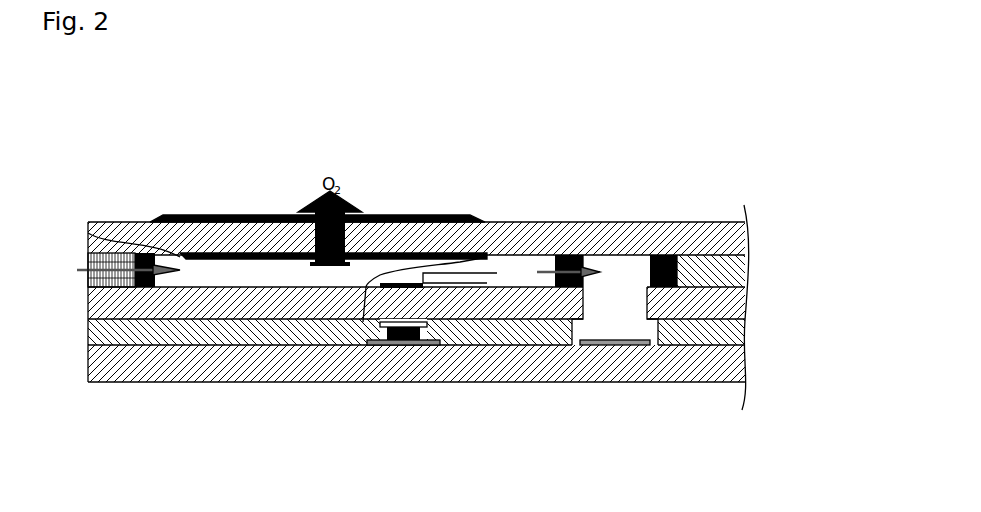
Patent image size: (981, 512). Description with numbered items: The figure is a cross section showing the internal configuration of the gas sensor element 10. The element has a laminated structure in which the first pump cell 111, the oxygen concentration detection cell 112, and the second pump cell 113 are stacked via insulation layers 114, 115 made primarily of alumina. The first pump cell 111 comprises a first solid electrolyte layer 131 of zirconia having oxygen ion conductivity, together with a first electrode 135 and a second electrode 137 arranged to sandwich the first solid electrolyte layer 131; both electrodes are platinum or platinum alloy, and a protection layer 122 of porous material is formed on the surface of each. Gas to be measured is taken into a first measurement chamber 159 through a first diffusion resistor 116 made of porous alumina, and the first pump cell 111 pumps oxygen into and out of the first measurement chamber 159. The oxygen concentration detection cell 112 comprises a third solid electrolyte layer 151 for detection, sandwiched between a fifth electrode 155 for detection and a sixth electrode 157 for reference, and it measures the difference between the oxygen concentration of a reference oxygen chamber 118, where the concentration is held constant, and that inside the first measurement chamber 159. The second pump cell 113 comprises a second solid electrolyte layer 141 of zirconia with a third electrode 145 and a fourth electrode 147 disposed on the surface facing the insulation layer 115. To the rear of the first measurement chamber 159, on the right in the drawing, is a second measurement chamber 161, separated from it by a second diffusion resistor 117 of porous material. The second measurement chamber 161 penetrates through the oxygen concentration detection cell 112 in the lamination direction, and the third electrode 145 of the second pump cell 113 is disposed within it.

The gas sensor element 10 is at (378, 156).
The first pump cell 111 is at (180, 158).
The oxygen concentration detection cell 112 is at (452, 161).
The second pump cell 113 is at (610, 444).
The insulation layer 114 is at (727, 273).
The insulation layer 115 is at (742, 330).
The first diffusion resistor 116 is at (88, 233).
The second diffusion resistor 117 is at (585, 254).
The reference oxygen chamber 118 is at (383, 332).
The protection layer 122 is at (180, 256).
The first solid electrolyte layer 131 is at (270, 240).
The first electrode 135 is at (207, 222).
The second electrode 137 is at (248, 222).
The second solid electrolyte layer 141 is at (717, 362).
The third electrode 145 is at (585, 347).
The fourth electrode 147 is at (428, 345).
The third solid electrolyte layer 151 is at (490, 288).
The fifth electrode 155 is at (470, 287).
The sixth electrode 157 is at (482, 258).
The first measurement chamber 159 is at (222, 287).
The second measurement chamber 161 is at (628, 270).